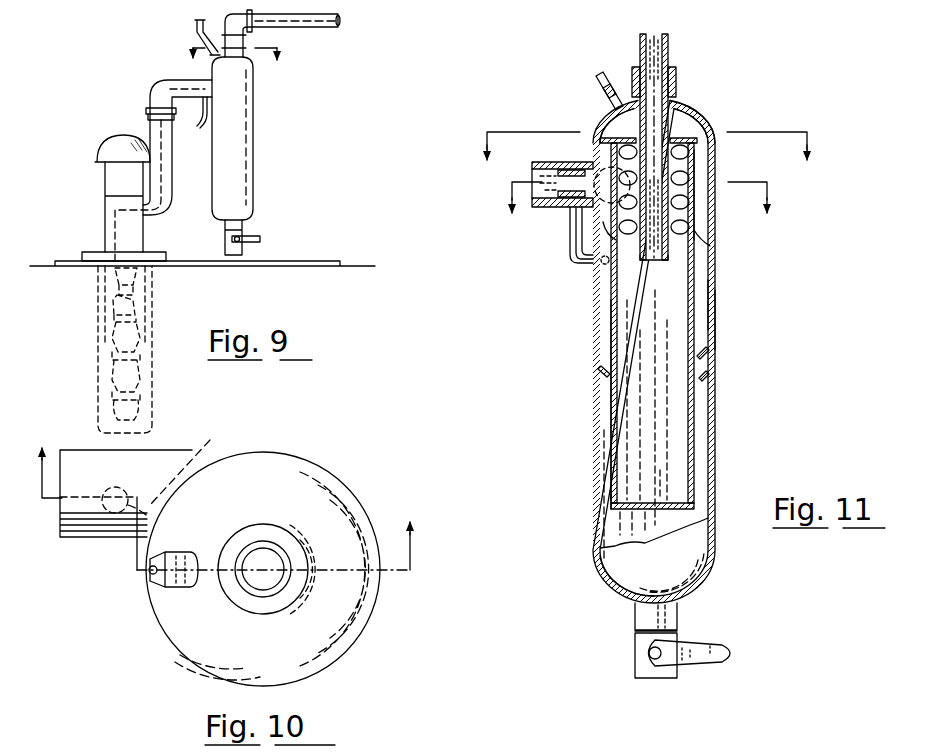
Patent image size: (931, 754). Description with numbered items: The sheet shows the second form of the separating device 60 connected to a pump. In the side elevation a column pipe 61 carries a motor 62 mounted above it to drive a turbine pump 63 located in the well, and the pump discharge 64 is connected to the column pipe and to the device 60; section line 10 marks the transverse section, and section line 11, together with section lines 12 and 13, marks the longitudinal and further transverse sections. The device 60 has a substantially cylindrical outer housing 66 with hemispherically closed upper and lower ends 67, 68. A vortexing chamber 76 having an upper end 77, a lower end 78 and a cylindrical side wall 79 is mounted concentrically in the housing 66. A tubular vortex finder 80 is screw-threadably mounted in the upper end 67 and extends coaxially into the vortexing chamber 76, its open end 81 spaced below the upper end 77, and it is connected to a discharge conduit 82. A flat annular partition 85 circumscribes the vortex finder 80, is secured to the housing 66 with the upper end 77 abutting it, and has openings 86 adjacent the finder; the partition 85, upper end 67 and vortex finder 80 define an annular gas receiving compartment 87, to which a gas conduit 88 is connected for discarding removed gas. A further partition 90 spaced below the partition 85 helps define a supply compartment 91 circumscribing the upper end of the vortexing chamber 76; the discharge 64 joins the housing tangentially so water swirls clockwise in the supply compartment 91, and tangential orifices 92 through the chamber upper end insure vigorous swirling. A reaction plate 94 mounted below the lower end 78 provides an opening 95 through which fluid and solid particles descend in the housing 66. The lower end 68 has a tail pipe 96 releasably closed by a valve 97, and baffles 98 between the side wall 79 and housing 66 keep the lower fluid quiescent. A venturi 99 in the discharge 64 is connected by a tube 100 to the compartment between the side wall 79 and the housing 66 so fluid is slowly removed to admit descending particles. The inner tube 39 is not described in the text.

In FIG. 9, the section line 10- 10 is at (237, 67).
In FIG. 10, the section line 11- 11 is at (227, 496).
In FIG. 11, the section line 12- 12 is at (647, 161).
In FIG. 11, the section line 13- 13 is at (641, 213).
In FIG. 11, the inner perforated tube 39 is at (611, 400).
In FIG. 9, the second form of the separating device 60 is at (262, 164).
In FIG. 11, the second form of the separating device 60 is at (586, 310).
In FIG. 9, the column pipe 61 is at (140, 236).
In FIG. 9, the motor 62 is at (115, 143).
In FIG. 9, the turbine pump 63 is at (102, 340).
In FIG. 9, the discharge 64 is at (172, 178).
In FIG. 10, the discharge 64 is at (80, 540).
In FIG. 11, the discharge 64 is at (548, 208).
In FIG. 11, the outer housing 66 is at (717, 321).
In FIG. 10, the upper end 67 is at (284, 468).
In FIG. 11, the upper end 67 is at (692, 104).
In FIG. 11, the lower end 68 is at (612, 592).
In FIG. 11, the vortexing chamber 76 is at (699, 397).
In FIG. 11, the upper end 77 is at (700, 152).
In FIG. 11, the lower end 78 is at (611, 505).
In FIG. 11, the side wall 79 is at (712, 301).
In FIG. 11, the vortex finder 80 is at (676, 128).
In FIG. 11, the open end 81 is at (663, 262).
In FIG. 9, the discharge conduit 82 is at (290, 27).
In FIG. 10, the discharge conduit 82 is at (252, 584).
In FIG. 11, the discharge conduit 82 is at (672, 42).
In FIG. 11, the flat annular partition 85 is at (606, 138).
In FIG. 11, the openings 86 is at (636, 128).
In FIG. 11, the gas receiving compartment 87 is at (673, 105).
In FIG. 9, the gas conduit 88 is at (197, 24).
In FIG. 10, the gas conduit 88 is at (168, 578).
In FIG. 11, the gas conduit 88 is at (604, 77).
In FIG. 11, the further partition 90 is at (700, 232).
In FIG. 11, the supply compartment 91 is at (703, 166).
In FIG. 11, the orifices 92 is at (684, 226).
In FIG. 11, the reaction plate 94 is at (670, 502).
In FIG. 11, the opening 95 is at (696, 505).
In FIG. 11, the tail pipe 96 is at (682, 620).
In FIG. 9, the valve 97 is at (228, 245).
In FIG. 11, the valve 97 is at (635, 666).
In FIG. 11, the baffles 98 is at (600, 371).
In FIG. 11, the venturi 99 is at (577, 178).
In FIG. 9, the tube 100 is at (204, 122).
In FIG. 10, the tube 100 is at (157, 468).
In FIG. 11, the tube 100 is at (568, 258).